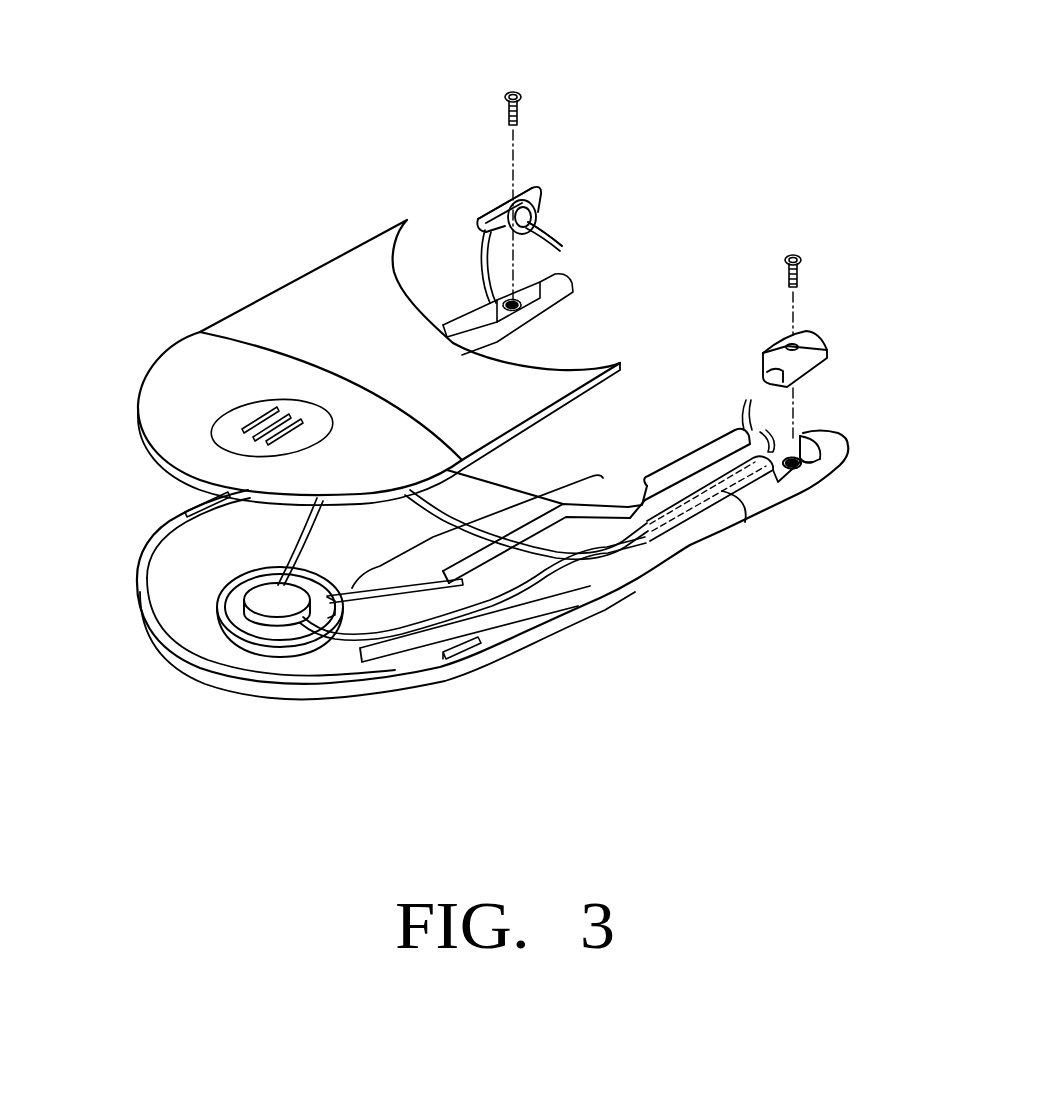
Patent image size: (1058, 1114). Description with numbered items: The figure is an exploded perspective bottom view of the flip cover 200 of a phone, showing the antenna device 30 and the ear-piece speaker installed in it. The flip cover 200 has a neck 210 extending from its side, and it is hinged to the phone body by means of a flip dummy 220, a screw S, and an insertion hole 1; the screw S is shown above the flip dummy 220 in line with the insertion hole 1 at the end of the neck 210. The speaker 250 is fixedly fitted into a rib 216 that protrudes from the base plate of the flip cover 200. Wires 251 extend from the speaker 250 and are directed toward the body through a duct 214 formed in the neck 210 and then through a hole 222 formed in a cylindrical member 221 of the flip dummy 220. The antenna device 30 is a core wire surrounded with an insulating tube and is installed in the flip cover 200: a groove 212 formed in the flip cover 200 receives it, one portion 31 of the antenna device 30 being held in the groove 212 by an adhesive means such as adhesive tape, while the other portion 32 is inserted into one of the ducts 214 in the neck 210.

The flip cover 200 is at (97, 476).
The neck 210 is at (685, 540).
The groove 212 is at (478, 604).
The duct 214 is at (733, 512).
The rib 216 is at (223, 633).
The flip dummy 220 is at (548, 195).
The cylindrical member 221 is at (553, 200).
The hole 222 is at (553, 230).
The speaker 250 is at (280, 612).
The wire 251 is at (475, 254).
The antenna device 30 is at (617, 500).
The portion of the antenna device 31 is at (457, 520).
The other portion of the antenna device 32 is at (687, 447).
The screw S is at (511, 90).
The insertion hole 1 is at (815, 472).